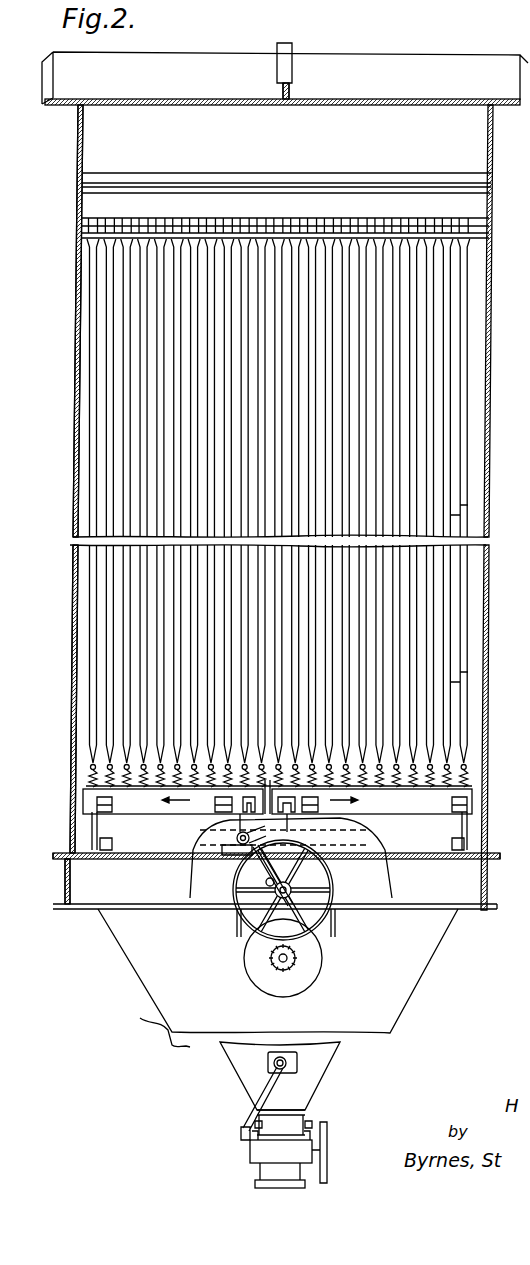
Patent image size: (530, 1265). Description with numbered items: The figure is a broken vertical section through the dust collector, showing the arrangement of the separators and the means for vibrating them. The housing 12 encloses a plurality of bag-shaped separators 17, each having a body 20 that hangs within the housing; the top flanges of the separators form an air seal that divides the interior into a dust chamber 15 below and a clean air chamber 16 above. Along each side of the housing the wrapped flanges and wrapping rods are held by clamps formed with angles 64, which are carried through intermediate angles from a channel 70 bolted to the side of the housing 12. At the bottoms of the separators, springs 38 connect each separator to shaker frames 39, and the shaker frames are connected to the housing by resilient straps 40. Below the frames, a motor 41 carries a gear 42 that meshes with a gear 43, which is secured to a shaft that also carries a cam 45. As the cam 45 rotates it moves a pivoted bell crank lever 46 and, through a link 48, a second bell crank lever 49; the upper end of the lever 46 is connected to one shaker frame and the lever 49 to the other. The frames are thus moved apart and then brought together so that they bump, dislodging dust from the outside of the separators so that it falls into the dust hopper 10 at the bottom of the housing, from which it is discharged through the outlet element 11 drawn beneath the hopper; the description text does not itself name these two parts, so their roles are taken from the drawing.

The hopper funnel 10 is at (176, 1006).
The discharge valve 11 is at (277, 1153).
The housing 12 is at (489, 458).
The dust chamber 15 is at (485, 406).
The clean air chamber 16 is at (135, 133).
The separators 17 is at (450, 515).
The body of the separator 20 is at (450, 682).
The springs 38 is at (303, 770).
The shaker frames 39 is at (92, 797).
The resilient straps 40 is at (92, 829).
The motor 41 is at (250, 963).
The gear 42 is at (298, 962).
The gear 43 is at (312, 942).
The cam 45 is at (345, 886).
The bell crank lever 46 is at (345, 866).
The link 48 is at (253, 858).
The bell crank lever 49 is at (237, 840).
The angles 64 is at (344, 218).
The channel 70 is at (276, 183).